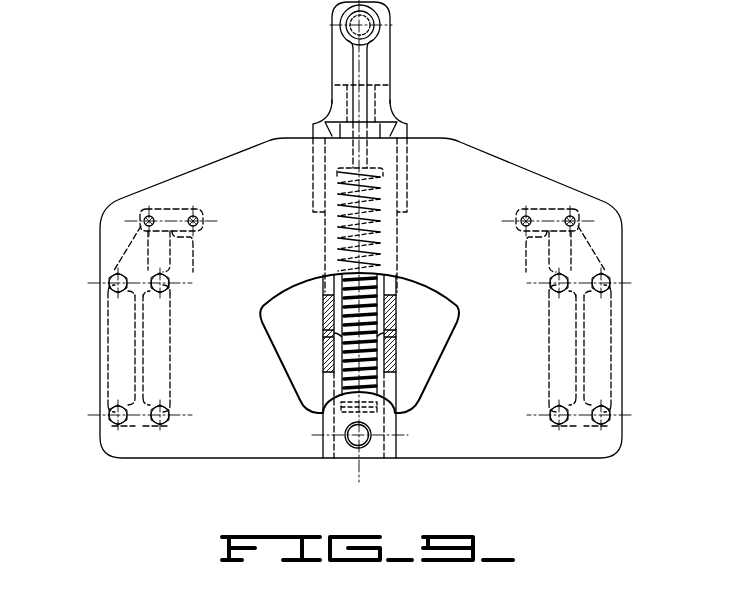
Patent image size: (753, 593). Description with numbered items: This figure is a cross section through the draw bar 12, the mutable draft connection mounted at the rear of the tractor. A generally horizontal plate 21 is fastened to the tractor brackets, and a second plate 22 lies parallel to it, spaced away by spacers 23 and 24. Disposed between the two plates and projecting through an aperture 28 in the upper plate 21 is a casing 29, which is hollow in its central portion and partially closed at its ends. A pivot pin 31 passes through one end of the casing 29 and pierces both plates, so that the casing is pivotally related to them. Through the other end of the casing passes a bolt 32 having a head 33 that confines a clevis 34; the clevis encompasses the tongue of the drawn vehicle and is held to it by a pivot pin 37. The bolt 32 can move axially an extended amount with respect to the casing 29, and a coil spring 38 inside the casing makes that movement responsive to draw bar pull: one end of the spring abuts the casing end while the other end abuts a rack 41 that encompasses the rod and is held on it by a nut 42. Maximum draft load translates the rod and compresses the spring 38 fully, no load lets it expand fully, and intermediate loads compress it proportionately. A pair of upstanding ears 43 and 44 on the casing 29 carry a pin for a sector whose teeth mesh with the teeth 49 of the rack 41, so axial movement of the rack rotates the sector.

The draw bar 12 is at (313, 138).
The horizontal plate 21 is at (272, 235).
The second plate 22 is at (301, 366).
The spacer 23 is at (118, 332).
The spacer 24 is at (604, 332).
The aperture 28 is at (284, 328).
The casing 29 is at (397, 398).
The pivot pin 31 is at (365, 440).
The bolt 32 is at (396, 155).
The head 33 is at (383, 84).
The clevis 34 is at (334, 58).
The pivot pin 37 is at (366, 23).
The coil spring 38 is at (378, 248).
The rack 41 is at (378, 387).
The nut 42 is at (340, 418).
The upstanding ear 43 is at (324, 306).
The upstanding ear 44 is at (396, 306).
The teeth 49 is at (365, 343).